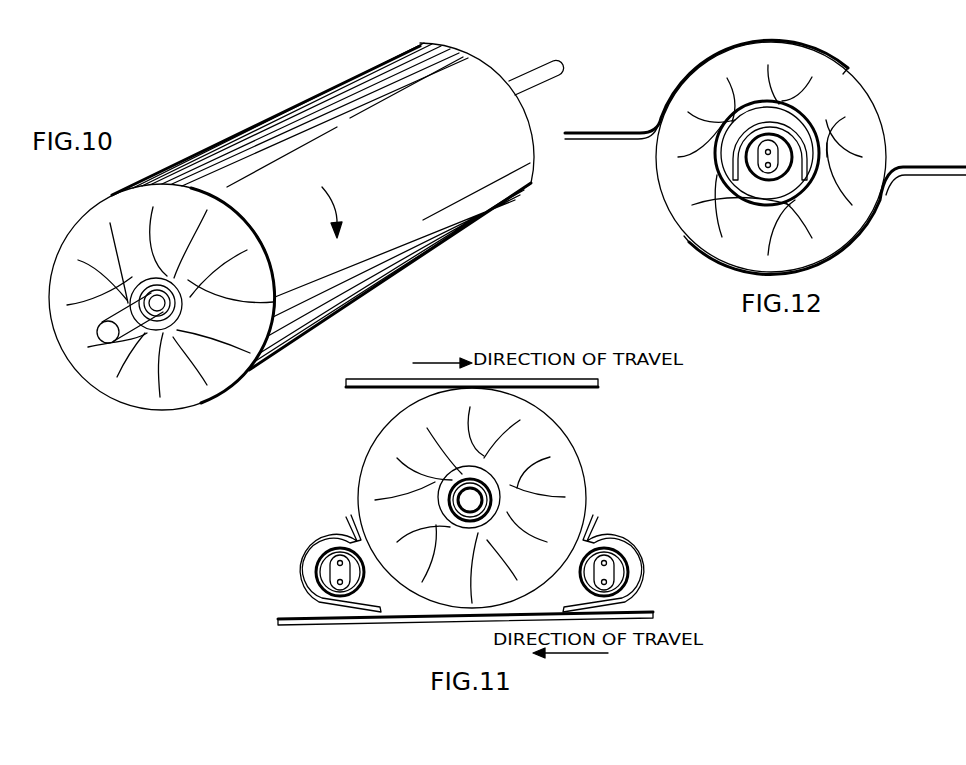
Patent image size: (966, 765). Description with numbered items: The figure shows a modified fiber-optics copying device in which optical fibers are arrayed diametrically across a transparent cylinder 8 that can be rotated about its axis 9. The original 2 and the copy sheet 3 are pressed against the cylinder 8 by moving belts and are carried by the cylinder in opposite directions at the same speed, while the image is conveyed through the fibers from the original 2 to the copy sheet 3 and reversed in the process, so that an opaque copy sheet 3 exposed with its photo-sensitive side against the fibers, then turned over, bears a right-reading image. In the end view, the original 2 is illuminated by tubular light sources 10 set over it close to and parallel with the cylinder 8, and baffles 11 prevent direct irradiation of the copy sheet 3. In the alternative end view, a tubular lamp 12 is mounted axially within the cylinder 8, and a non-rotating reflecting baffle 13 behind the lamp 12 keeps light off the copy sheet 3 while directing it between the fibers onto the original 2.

In FIG. 12, the original 2 is at (873, 218).
In FIG. 11, the original 2 is at (395, 627).
In FIG. 12, the copy sheet 3 is at (675, 86).
In FIG. 11, the copy sheet 3 is at (577, 388).
In FIG. 10, the transparent cylinder 8 is at (217, 155).
In FIG. 12, the transparent cylinder 8 is at (862, 89).
In FIG. 11, the transparent cylinder 8 is at (588, 490).
In FIG. 10, the axis 9 is at (103, 325).
In FIG. 11, the axis 9 is at (435, 487).
In FIG. 11, the tubular light sources 10 is at (328, 578).
In FIG. 11, the baffles 11 is at (310, 562).
In FIG. 12, the tubular lamp 12 is at (782, 170).
In FIG. 12, the reflecting baffle 13 is at (733, 163).